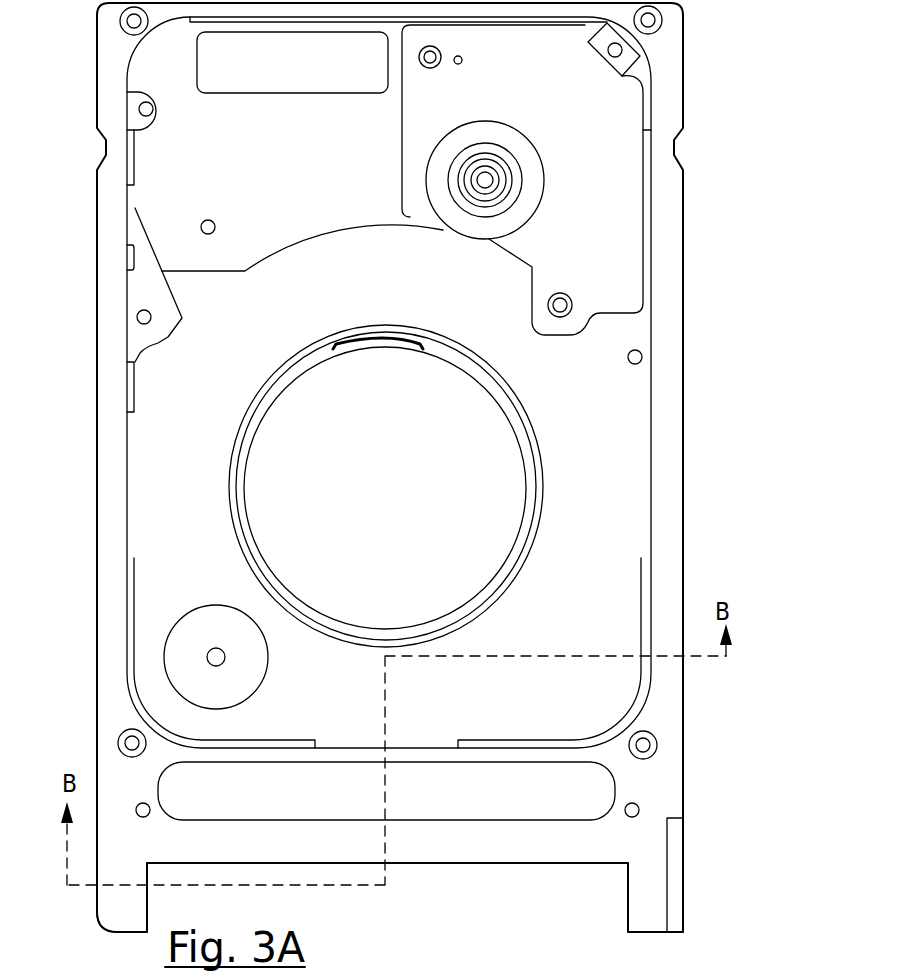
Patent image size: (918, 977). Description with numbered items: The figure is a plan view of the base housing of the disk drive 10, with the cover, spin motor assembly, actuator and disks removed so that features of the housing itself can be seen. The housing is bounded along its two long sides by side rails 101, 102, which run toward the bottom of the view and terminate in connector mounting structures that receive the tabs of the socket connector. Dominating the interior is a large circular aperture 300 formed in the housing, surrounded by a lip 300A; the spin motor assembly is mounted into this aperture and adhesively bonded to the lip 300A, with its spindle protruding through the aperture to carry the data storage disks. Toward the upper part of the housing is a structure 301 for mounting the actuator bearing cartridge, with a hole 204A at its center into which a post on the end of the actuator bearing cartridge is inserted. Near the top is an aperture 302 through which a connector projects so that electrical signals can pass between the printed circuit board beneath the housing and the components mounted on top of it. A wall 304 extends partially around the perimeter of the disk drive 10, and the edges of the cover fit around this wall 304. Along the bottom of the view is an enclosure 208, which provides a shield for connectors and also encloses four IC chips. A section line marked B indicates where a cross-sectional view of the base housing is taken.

The disk drive 10 is at (720, 378).
The side rail 101 is at (95, 692).
The side rail 102 is at (681, 762).
The enclosure 208 is at (490, 802).
The hole 204A is at (485, 180).
The aperture 300 is at (490, 470).
The lip 300A is at (297, 593).
The structure for mounting actuator bearing 301 is at (512, 174).
The aperture 302 is at (238, 77).
The wall 304 is at (645, 215).